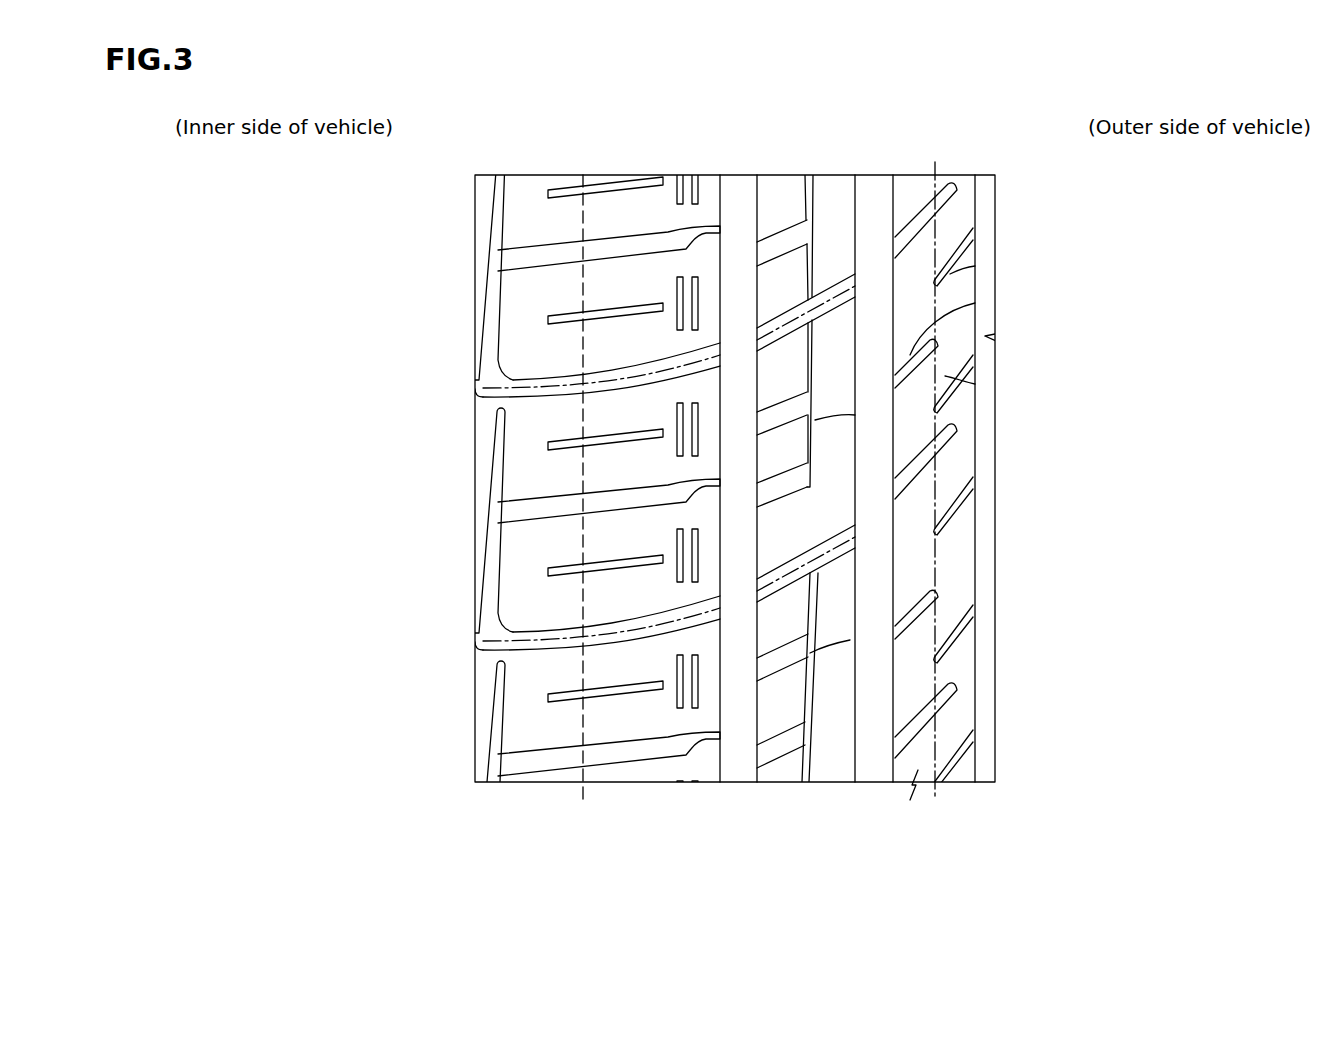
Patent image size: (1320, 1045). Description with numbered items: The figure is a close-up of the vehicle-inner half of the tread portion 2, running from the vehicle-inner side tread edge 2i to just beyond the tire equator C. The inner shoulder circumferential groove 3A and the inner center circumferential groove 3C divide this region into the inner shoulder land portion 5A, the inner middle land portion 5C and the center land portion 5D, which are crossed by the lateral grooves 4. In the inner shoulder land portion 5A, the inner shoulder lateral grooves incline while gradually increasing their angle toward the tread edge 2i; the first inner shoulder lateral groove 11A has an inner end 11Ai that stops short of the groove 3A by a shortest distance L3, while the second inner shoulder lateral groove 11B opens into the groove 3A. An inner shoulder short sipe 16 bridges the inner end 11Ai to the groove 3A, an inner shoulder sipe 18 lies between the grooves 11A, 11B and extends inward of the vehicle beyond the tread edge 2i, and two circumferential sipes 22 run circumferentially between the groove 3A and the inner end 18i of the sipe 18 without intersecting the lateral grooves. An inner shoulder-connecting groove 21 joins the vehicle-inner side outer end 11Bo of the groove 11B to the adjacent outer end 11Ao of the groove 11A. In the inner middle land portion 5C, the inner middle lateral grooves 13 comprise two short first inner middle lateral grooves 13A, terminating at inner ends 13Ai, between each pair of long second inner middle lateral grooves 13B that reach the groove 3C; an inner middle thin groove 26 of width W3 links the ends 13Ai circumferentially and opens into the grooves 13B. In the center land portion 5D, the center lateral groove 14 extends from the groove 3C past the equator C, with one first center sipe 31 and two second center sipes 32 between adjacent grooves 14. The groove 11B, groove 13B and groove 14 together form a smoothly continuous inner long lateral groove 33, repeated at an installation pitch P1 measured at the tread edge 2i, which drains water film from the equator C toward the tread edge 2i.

The tread portion 2 is at (983, 176).
The vehicle-inner side tread edge 2i is at (583, 175).
The inner shoulder circumferential groove 3A is at (737, 223).
The inner center circumferential groove 3C is at (876, 223).
The lateral grooves 4 is at (283, 515).
The inner shoulder land portion 5A is at (535, 475).
The inner middle land portion 5C is at (922, 490).
The center land portion 5D is at (988, 411).
The first inner shoulder lateral groove 11A is at (640, 245).
The vehicle-inner side outer end of first inner shoulder lateral groove 11Ao is at (690, 485).
The inner end of first inner shoulder lateral groove 11Ai is at (720, 737).
The second inner shoulder lateral groove 11B is at (680, 370).
The vehicle-inner side outer end of second inner shoulder lateral groove 11Bo is at (492, 640).
The inner middle lateral groove 13 is at (1180, 548).
The first inner middle lateral groove 13A is at (778, 657).
The tire axial inner end of first inner middle lateral groove 13Ai is at (812, 630).
The second inner middle lateral groove 13B is at (828, 286).
The center lateral groove 14 is at (913, 210).
The inner shoulder short sipe 16 is at (697, 723).
The inner shoulder sipe 18 is at (617, 322).
The inner end of inner shoulder sipe 18i is at (643, 690).
The inner shoulder-connecting groove 21 is at (490, 290).
The circumferential sipes 22 is at (695, 415).
The inner middle thin groove 26 is at (855, 415).
The first center sipe 31 is at (975, 303).
The second center sipe 32 is at (975, 266).
The inner long lateral groove 33 is at (912, 126).
The tire equator C is at (934, 470).
The installation pitch of inner long lateral groove P1 is at (475, 629).
The shortest distance L3 is at (698, 782).
The groove width of inner middle thin groove W3 is at (802, 782).